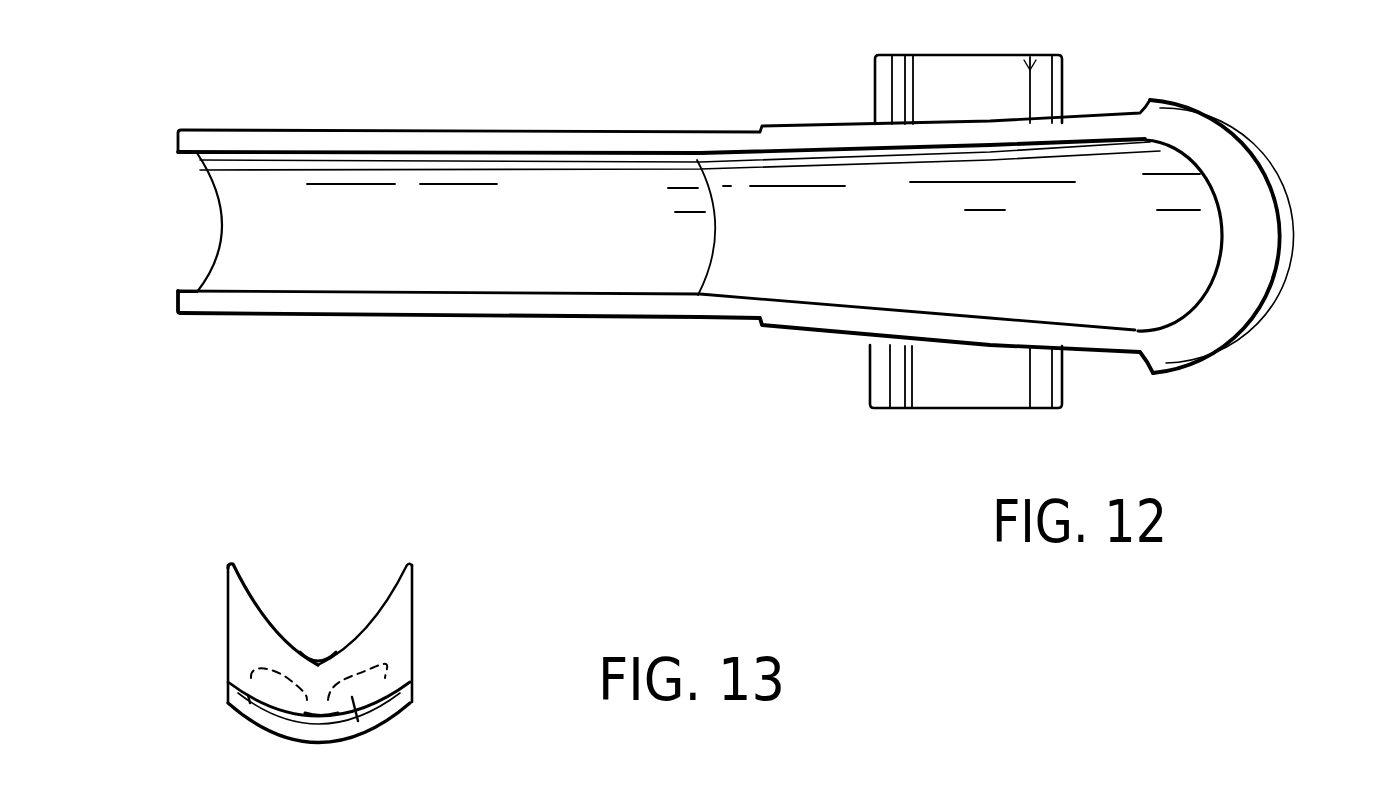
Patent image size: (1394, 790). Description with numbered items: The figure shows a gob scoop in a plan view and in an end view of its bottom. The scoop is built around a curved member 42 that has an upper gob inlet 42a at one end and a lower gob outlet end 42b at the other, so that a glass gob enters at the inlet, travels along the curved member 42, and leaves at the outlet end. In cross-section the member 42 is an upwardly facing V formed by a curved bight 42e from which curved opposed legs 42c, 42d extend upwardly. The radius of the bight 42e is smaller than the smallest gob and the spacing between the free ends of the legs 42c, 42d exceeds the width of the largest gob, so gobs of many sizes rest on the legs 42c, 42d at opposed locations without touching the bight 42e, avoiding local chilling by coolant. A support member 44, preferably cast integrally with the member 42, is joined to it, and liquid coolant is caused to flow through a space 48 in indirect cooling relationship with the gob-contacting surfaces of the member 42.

In FIG. 12, the curved member 42 is at (437, 131).
In FIG. 13, the curved member 42 is at (412, 623).
In FIG. 12, the upper gob inlet 42a is at (1288, 274).
In FIG. 12, the lower gob outlet end 42b is at (222, 229).
In FIG. 12, the leg 42c is at (303, 131).
In FIG. 13, the leg 42c is at (232, 563).
In FIG. 12, the leg 42d is at (482, 300).
In FIG. 13, the leg 42d is at (407, 563).
In FIG. 13, the curved bight 42e is at (322, 660).
In FIG. 12, the support member 44 is at (1062, 57).
In FIG. 13, the space 48 is at (362, 737).